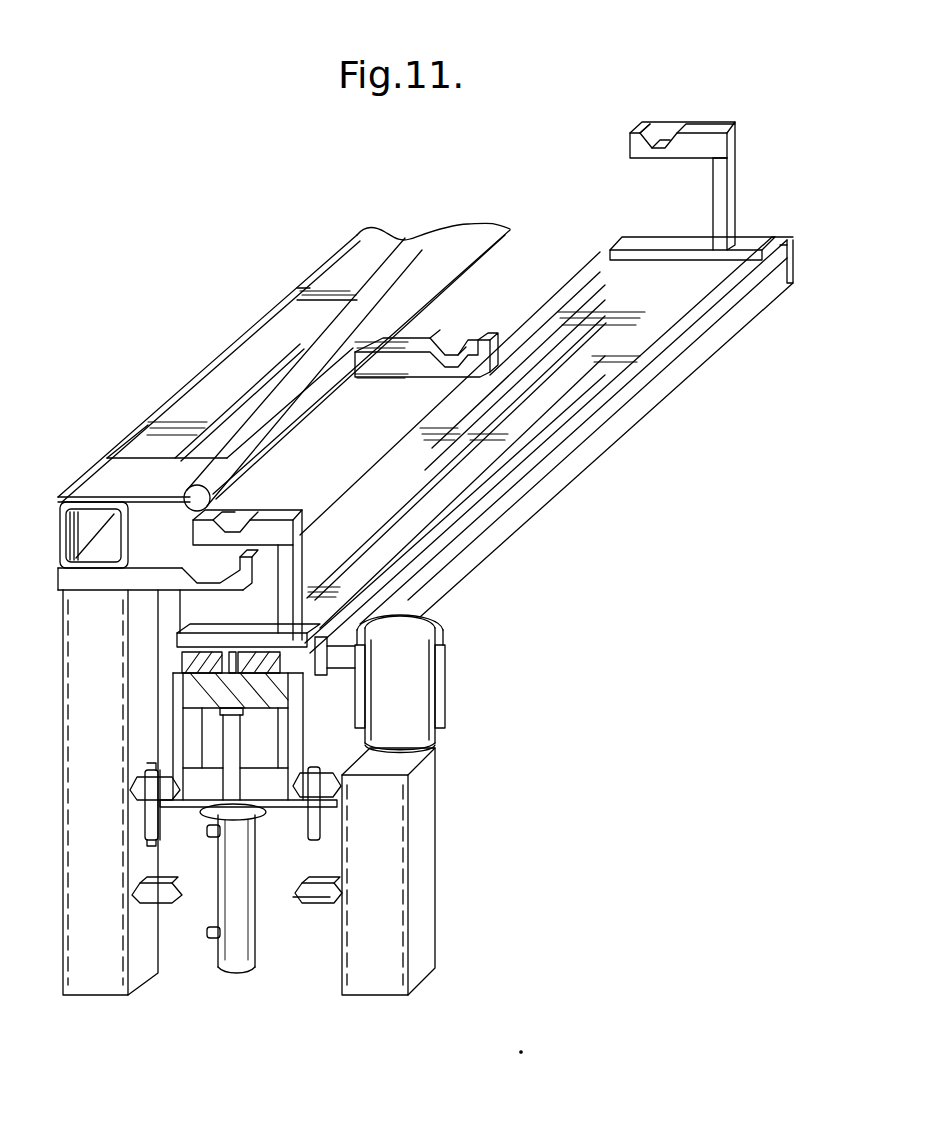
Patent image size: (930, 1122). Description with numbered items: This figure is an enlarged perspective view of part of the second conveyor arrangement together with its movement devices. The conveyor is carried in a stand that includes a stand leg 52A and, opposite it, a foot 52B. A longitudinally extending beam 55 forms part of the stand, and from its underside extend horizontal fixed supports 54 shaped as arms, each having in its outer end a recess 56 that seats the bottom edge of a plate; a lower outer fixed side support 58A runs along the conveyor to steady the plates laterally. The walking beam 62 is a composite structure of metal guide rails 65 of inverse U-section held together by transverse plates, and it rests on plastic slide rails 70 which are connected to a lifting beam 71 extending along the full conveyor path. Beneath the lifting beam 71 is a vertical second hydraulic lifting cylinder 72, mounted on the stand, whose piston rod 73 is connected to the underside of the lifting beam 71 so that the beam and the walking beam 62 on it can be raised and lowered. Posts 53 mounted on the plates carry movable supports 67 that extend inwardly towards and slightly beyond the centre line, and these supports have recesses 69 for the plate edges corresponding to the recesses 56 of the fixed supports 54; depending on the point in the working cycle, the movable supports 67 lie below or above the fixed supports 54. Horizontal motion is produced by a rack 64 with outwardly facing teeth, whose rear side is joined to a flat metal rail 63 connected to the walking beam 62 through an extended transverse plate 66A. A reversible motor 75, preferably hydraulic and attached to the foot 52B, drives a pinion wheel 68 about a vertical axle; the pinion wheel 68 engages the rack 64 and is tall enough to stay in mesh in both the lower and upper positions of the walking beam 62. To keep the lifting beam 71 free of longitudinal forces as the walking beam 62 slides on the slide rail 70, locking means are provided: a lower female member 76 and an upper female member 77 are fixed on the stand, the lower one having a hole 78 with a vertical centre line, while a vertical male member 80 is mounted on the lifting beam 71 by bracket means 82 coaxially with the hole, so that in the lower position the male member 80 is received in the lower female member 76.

The stand leg 52A is at (62, 800).
The foot 52B is at (432, 898).
The post 53 is at (736, 186).
The fixed support 54 is at (88, 586).
The longitudinally extending beam 55 is at (62, 522).
The recess 56 is at (214, 572).
The lower outer fixed side support 58A is at (493, 232).
The walking beam 62 is at (428, 412).
The flat metal rail 63 is at (555, 427).
The rack 64 is at (793, 283).
The guide rail 65 is at (425, 502).
The extended transverse plate 66A is at (222, 628).
The movable support 67 is at (290, 512).
The pinion wheel 68 is at (446, 672).
The recess 69 is at (235, 518).
The plastic slide rail 70 is at (265, 667).
The lifting beam 71 is at (256, 712).
The second hydraulic lifting cylinder 72 is at (233, 972).
The piston rod 73 is at (230, 775).
The reversible motor 75 is at (438, 772).
The lower female member 76 is at (172, 905).
The upper female member 77 is at (135, 772).
The hole 78 is at (314, 906).
The male member 80 is at (312, 840).
The bracket means 82 is at (282, 808).